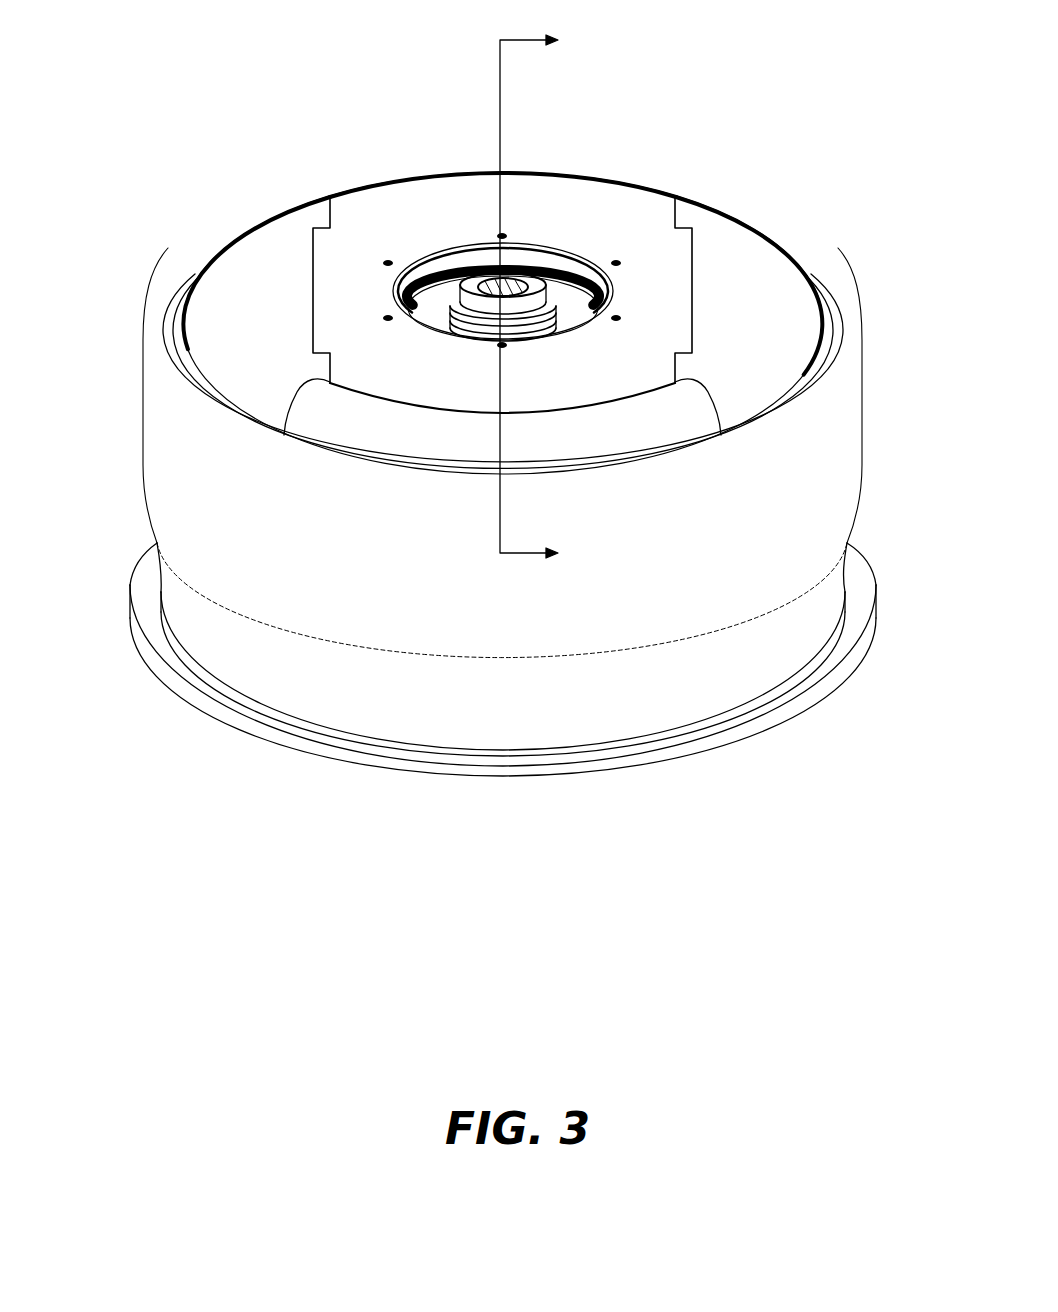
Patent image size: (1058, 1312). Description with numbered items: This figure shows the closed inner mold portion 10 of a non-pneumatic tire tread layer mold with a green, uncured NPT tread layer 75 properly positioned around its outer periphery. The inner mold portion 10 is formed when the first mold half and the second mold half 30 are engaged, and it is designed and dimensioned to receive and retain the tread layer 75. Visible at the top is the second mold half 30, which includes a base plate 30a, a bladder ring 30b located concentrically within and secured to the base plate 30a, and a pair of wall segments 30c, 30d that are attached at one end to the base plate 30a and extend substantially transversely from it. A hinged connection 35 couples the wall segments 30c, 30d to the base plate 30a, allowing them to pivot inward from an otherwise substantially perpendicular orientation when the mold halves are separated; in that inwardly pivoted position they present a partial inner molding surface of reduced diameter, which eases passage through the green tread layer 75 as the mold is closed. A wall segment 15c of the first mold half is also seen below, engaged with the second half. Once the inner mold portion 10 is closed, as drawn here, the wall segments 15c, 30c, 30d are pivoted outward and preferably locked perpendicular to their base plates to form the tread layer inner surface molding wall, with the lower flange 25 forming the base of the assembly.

The inner mold portion 10 is at (386, 100).
The wall segment 15c is at (323, 413).
The base flange 25 is at (672, 702).
The second mold half 30 is at (535, 284).
The base plate 30a is at (563, 188).
The bladder ring 30b is at (438, 295).
The wall segment 30c is at (253, 250).
The wall segment 30d is at (765, 250).
The hinged connection 35 is at (330, 365).
The NPT tread layer 75 is at (852, 480).